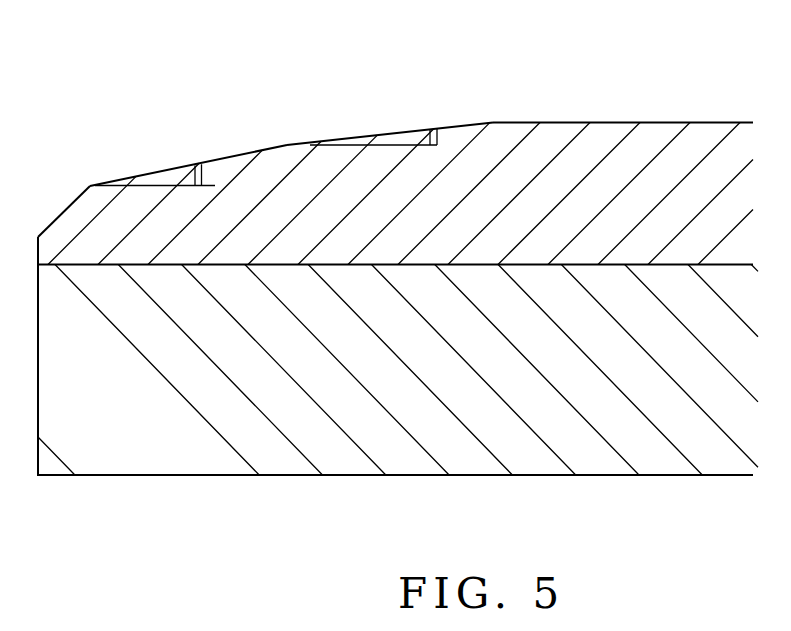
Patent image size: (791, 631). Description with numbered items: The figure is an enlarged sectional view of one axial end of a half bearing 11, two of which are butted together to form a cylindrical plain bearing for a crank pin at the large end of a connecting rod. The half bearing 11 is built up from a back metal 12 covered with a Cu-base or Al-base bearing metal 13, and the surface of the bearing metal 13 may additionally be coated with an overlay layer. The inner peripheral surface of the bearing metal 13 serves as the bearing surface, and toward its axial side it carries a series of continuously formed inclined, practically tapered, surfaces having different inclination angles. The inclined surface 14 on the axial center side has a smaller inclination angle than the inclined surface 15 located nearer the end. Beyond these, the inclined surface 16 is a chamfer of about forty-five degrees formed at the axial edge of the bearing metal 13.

The half bearing 11 is at (391, 280).
The back metal 12 is at (103, 467).
The bearing metal 13 is at (507, 130).
The inclined surface 14 is at (387, 132).
The inclined surface 15 is at (175, 168).
The inclined surface 16 is at (63, 210).